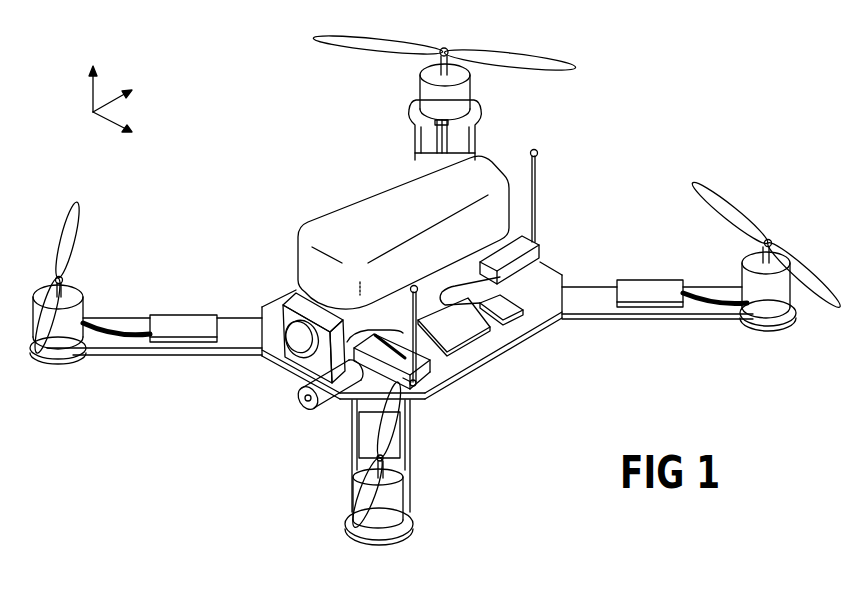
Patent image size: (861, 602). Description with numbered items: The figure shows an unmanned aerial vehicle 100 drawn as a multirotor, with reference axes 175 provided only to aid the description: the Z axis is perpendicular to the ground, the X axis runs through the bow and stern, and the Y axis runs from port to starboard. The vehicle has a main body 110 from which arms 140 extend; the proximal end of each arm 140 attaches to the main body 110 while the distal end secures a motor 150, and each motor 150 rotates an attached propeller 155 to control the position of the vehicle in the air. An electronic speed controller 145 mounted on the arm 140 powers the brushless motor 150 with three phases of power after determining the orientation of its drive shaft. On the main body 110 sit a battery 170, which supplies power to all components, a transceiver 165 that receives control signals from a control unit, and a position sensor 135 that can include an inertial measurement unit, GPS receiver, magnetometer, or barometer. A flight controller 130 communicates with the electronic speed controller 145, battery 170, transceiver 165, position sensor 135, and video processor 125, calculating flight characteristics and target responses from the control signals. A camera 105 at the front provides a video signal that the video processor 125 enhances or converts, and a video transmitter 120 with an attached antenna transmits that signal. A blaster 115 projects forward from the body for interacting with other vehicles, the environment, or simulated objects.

The unmanned aerial vehicle 100 is at (609, 134).
The camera 105 is at (292, 310).
The main body 110 is at (273, 347).
The blaster 115 is at (323, 405).
The video transmitter 120 is at (427, 385).
The video processor 125 is at (435, 360).
The flight controller 130 is at (466, 328).
The position sensor 135 is at (515, 315).
The arm 140 is at (603, 320).
The electronic speed controller 145 is at (673, 307).
The motor 150 is at (787, 303).
The propeller 155 is at (717, 200).
The transceiver 165 is at (532, 255).
The battery 170 is at (367, 205).
The axes 175 is at (131, 65).